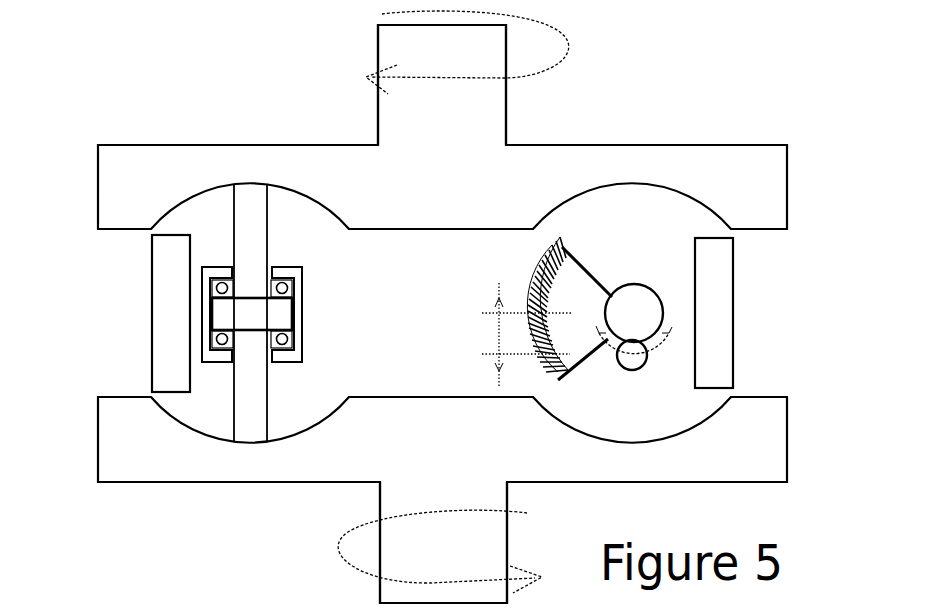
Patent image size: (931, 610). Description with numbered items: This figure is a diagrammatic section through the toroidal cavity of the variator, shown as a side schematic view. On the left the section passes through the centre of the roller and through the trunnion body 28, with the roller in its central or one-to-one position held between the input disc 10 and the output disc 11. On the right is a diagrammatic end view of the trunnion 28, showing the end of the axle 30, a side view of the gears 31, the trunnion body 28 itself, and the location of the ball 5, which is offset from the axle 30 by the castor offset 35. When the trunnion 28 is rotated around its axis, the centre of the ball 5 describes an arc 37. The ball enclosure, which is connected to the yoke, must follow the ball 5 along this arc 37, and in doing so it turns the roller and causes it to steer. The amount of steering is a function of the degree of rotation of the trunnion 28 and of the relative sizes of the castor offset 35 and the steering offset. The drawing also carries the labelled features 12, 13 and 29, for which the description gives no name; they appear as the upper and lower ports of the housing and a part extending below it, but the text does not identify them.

The ball 5 is at (634, 370).
The input disc 10 is at (163, 145).
The output disc 11 is at (163, 482).
The outlet port 12 is at (380, 592).
The inlet port 13 is at (378, 40).
The trunnion body 28 is at (151, 328).
The shaft 29 is at (208, 609).
The axle 30 is at (634, 313).
The gears 31 is at (563, 247).
The castor offset 35 is at (499, 330).
The arc 37 is at (605, 347).